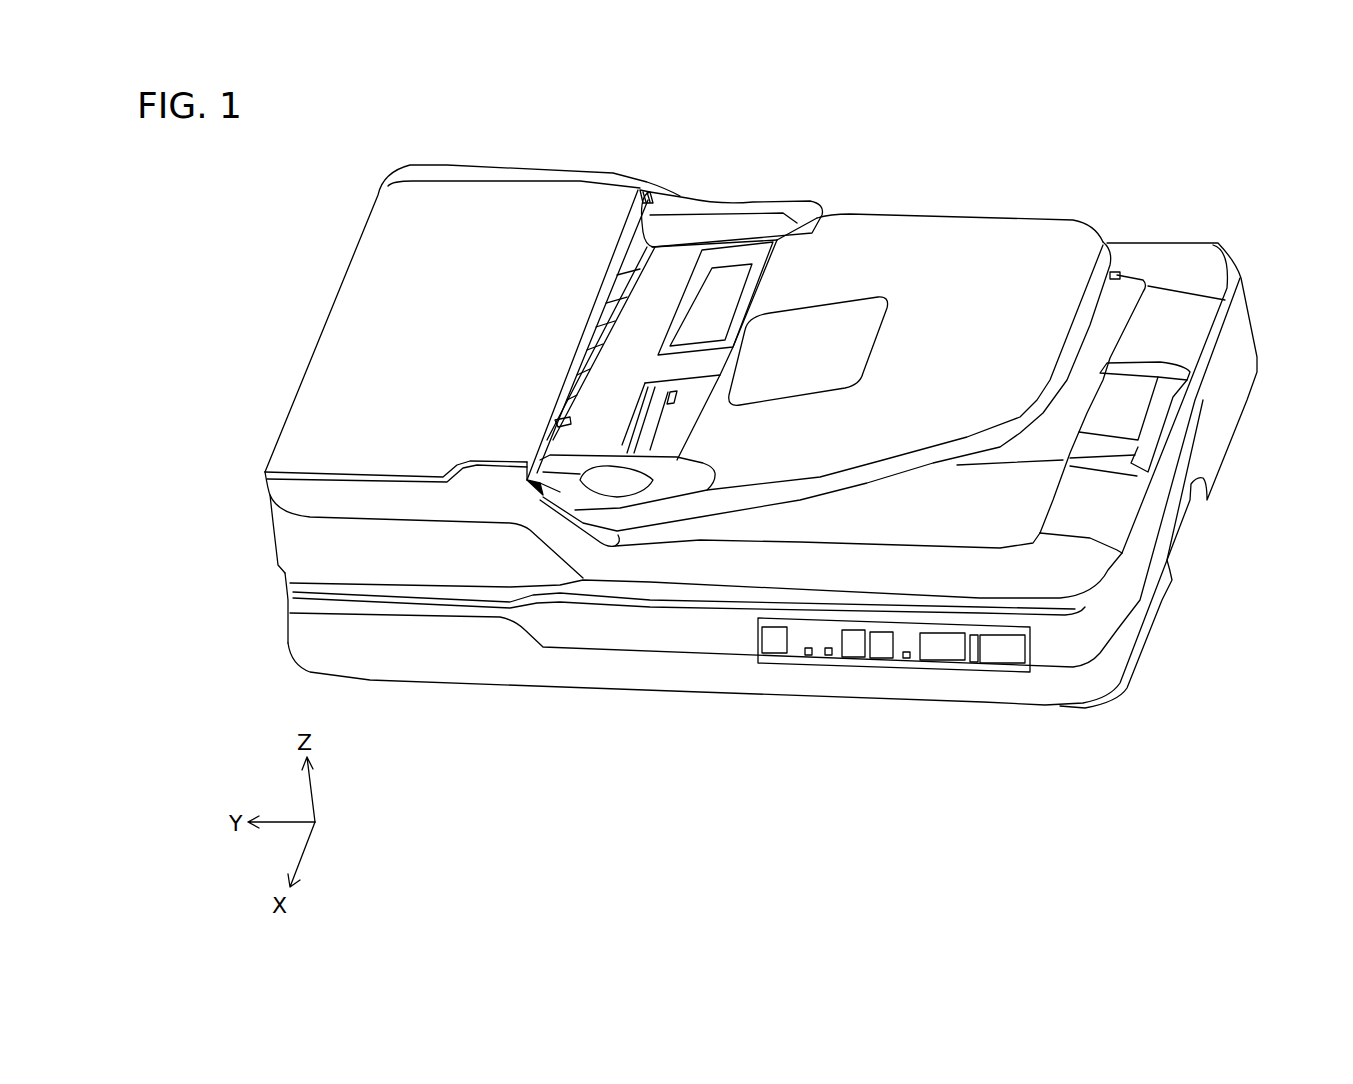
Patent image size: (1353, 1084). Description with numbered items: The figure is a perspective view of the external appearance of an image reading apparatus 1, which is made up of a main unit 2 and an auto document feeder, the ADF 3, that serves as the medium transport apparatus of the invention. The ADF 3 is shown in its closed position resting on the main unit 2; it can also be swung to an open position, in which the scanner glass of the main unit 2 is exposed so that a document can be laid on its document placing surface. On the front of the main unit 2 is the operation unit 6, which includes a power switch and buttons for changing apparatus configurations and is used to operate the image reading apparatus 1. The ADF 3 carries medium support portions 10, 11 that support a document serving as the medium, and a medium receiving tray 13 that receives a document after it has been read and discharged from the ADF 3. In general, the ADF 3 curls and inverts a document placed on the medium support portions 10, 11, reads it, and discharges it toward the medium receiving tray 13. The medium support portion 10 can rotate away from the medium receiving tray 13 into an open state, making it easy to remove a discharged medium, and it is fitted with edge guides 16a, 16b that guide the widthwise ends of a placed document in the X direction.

The image reading apparatus 1 is at (1113, 165).
The main unit 2 is at (283, 643).
The auto document feeder (ADF) 3 is at (487, 158).
The operation unit 6 is at (798, 650).
The medium support portion 10 is at (917, 207).
The medium support portion 11 is at (632, 267).
The medium receiving tray 13 is at (943, 503).
The edge guide 16a is at (568, 463).
The edge guide 16b is at (683, 193).